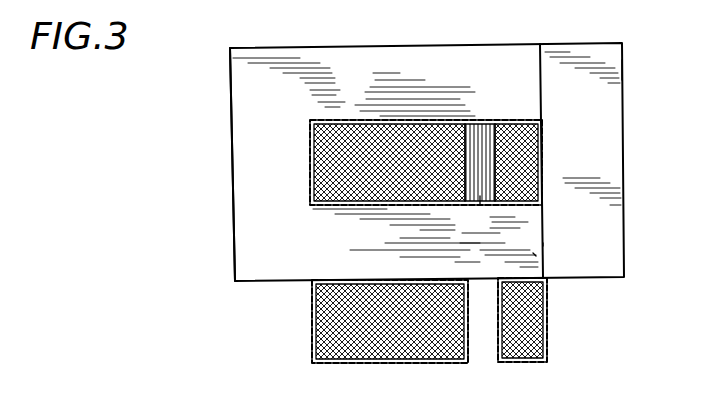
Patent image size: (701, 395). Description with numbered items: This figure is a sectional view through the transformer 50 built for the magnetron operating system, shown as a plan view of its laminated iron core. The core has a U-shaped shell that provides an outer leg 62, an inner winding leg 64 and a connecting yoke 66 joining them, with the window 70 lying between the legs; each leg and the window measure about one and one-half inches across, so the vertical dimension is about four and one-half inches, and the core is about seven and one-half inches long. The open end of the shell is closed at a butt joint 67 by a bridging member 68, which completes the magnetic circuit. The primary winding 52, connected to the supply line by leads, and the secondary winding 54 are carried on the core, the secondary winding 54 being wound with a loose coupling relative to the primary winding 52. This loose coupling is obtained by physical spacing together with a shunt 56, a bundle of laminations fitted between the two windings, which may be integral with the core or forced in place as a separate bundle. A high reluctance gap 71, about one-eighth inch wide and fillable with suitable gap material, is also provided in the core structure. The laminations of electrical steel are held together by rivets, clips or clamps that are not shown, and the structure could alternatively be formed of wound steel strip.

The transformer 50 is at (626, 69).
The primary winding 52 is at (528, 335).
The secondary winding 54 is at (325, 333).
The shunt 56 is at (470, 140).
The outer leg 62 is at (408, 65).
The inner winding leg 64 is at (533, 253).
The connecting yoke 66 is at (248, 210).
The butt joint 67 is at (543, 243).
The bridging member 68 is at (603, 140).
The window 70 is at (340, 128).
The high reluctance gap 71 is at (484, 205).